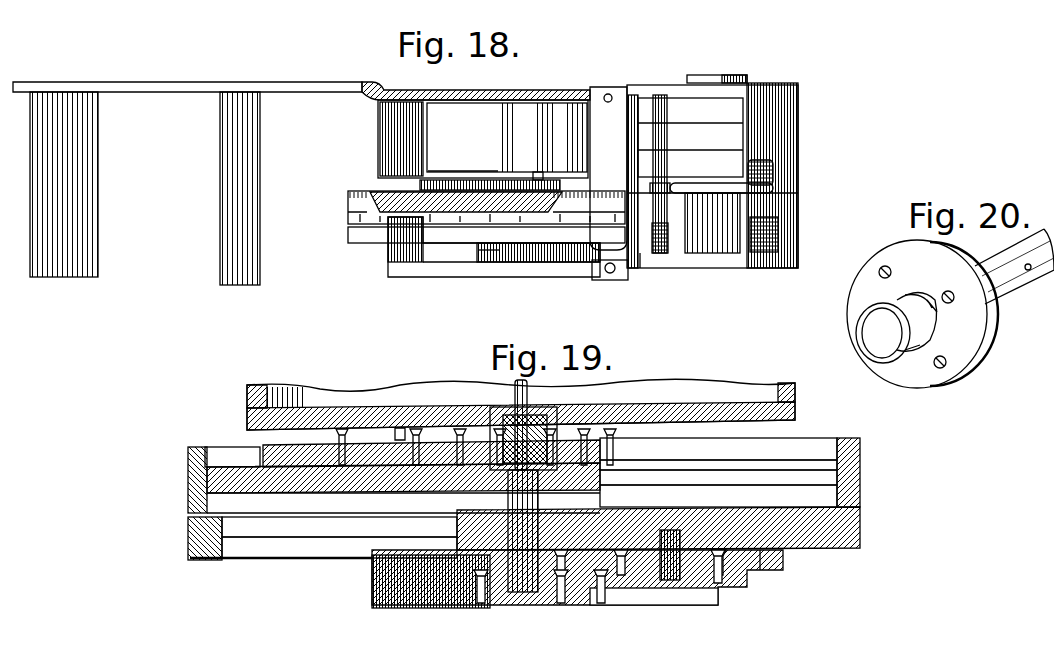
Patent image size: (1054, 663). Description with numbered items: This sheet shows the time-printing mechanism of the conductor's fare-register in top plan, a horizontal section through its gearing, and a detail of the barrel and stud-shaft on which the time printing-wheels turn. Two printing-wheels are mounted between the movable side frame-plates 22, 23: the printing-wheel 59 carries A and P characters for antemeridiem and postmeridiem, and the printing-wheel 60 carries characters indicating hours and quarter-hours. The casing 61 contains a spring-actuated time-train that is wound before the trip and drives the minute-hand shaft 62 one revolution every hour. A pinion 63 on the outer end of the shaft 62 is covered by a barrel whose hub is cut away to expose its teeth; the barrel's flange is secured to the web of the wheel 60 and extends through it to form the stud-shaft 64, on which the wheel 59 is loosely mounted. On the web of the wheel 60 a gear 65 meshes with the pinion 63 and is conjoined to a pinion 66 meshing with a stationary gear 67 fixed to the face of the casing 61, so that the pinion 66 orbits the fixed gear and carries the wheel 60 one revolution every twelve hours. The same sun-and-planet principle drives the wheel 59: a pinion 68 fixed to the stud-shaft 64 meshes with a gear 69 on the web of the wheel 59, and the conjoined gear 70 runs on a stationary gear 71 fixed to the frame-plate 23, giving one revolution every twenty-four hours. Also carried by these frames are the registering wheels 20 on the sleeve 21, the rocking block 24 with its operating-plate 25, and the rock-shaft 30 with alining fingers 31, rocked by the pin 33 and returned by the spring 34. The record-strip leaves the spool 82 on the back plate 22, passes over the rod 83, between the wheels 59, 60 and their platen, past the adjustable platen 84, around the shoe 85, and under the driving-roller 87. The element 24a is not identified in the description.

In FIG. 18, the registering wheels 20 is at (690, 97).
In FIG. 18, the sleeve 21 is at (688, 98).
In FIG. 18, the removable side frame-plate 22 is at (205, 88).
In FIG. 18, the removable side frame-plate 23 is at (556, 265).
In FIG. 19, the removable side frame-plate 23 is at (474, 606).
In FIG. 18, the rocking block 24 is at (748, 200).
In FIG. 18, the roller 24a is at (775, 185).
In FIG. 18, the operating-plate 25 is at (708, 77).
In FIG. 18, the rock-shaft 30 is at (650, 98).
In FIG. 18, the fingers 31 is at (640, 160).
In FIG. 18, the pin 33 is at (665, 188).
In FIG. 18, the spring 34 is at (660, 254).
In FIG. 18, the printing-wheel 59 is at (348, 245).
In FIG. 19, the printing-wheel 59 is at (192, 537).
In FIG. 18, the printing-wheel 60 is at (350, 210).
In FIG. 19, the printing-wheel 60 is at (193, 468).
In FIG. 18, the casing 61 is at (463, 137).
In FIG. 19, the casing 61 is at (360, 397).
In FIG. 19, the minute-hand shaft 62 is at (515, 383).
In FIG. 19, the pinion 63 is at (533, 415).
In FIG. 18, the stud-shaft 64 is at (457, 177).
In FIG. 19, the stud-shaft 64 is at (522, 592).
In FIG. 20, the stud-shaft 64 is at (1012, 282).
In FIG. 18, the gear 65 is at (390, 193).
In FIG. 19, the gear 65 is at (272, 450).
In FIG. 19, the pinion 66 is at (400, 428).
In FIG. 18, the stationary gear 67 is at (537, 178).
In FIG. 19, the stationary gear 67 is at (468, 430).
In FIG. 18, the pinion 68 is at (515, 258).
In FIG. 19, the pinion 68 is at (487, 562).
In FIG. 18, the gear 69 is at (640, 268).
In FIG. 19, the gear 69 is at (765, 565).
In FIG. 18, the gear 70 is at (588, 270).
In FIG. 19, the gear 70 is at (733, 586).
In FIG. 18, the stationary gear 71 is at (490, 260).
In FIG. 19, the stationary gear 71 is at (580, 590).
In FIG. 18, the spool 82 is at (228, 197).
In FIG. 18, the rod 83 is at (393, 137).
In FIG. 18, the platen 84 is at (586, 118).
In FIG. 18, the shoe 85 is at (778, 118).
In FIG. 18, the driving-roller 87 is at (705, 242).